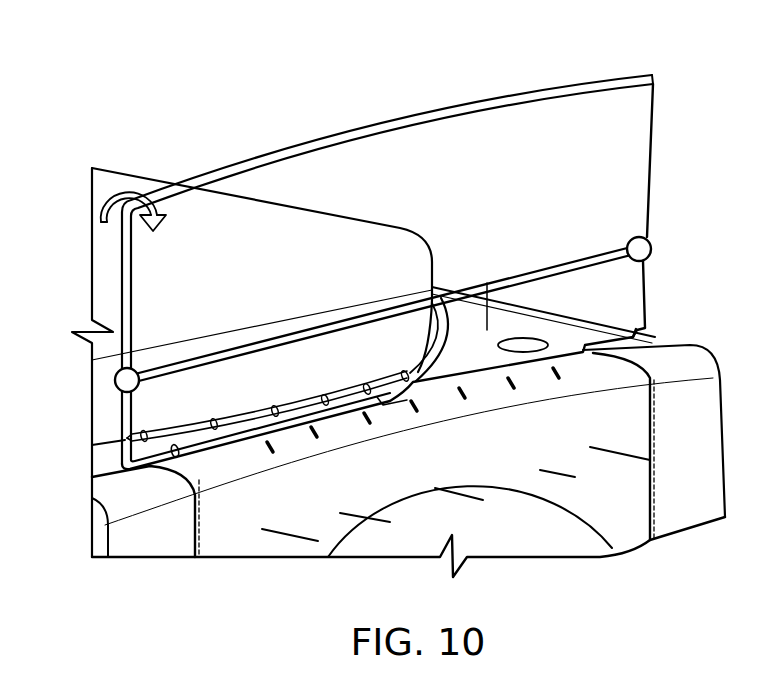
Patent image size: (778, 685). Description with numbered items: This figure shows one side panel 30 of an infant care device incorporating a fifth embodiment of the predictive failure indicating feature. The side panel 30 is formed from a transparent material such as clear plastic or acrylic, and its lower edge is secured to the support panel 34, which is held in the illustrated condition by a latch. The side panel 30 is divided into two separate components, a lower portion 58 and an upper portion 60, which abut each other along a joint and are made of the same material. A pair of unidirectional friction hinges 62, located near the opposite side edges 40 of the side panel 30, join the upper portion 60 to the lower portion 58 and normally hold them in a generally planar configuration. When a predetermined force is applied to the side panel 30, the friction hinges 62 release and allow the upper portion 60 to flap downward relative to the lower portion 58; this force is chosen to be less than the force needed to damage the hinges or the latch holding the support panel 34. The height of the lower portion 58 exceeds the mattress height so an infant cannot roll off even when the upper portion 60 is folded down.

The side panel 30 is at (377, 111).
The support panel 34 is at (640, 537).
The side edges 40 is at (655, 103).
The lower portion 58 is at (645, 300).
The upper portion 60 is at (630, 153).
The unidirectional friction hinges 62 is at (653, 238).